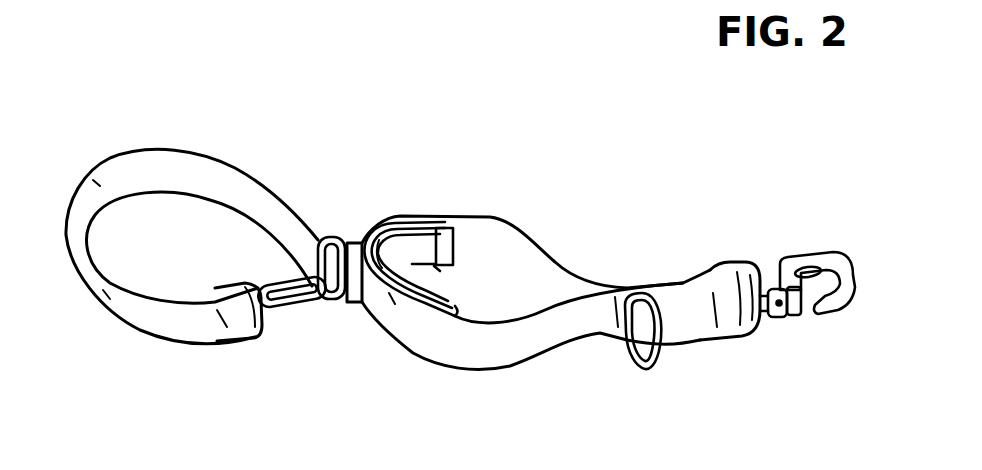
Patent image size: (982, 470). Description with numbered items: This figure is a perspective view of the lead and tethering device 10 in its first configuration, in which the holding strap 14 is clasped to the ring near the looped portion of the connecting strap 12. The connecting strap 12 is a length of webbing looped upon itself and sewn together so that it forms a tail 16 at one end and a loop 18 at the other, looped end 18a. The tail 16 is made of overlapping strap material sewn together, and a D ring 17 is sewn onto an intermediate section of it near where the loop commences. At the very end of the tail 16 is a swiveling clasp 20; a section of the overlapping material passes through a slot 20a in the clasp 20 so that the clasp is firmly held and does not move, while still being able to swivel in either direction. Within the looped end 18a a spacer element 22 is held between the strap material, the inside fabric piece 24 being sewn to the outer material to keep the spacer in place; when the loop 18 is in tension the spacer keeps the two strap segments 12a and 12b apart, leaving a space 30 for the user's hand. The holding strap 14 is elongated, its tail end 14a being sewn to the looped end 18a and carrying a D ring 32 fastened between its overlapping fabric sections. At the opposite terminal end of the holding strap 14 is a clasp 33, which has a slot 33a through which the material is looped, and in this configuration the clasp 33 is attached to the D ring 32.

The lead and tethering device 10 is at (349, 188).
The connecting strap 12 is at (548, 352).
The strap segment 12a is at (568, 277).
The strap segment 12b is at (493, 357).
The holding strap 14 is at (157, 173).
The tail end 14a is at (351, 303).
The tail 16 is at (684, 302).
The D ring 17 is at (658, 364).
The loop 18 is at (524, 220).
The looped end 18a is at (403, 340).
The clasp 20 is at (806, 258).
The slot 20a is at (760, 333).
The spacer element 22 is at (380, 227).
The inside fabric piece 24 is at (446, 227).
The space 30 is at (507, 290).
The D ring 32 is at (333, 237).
The clasp 33 is at (283, 332).
The slot 33a is at (225, 285).